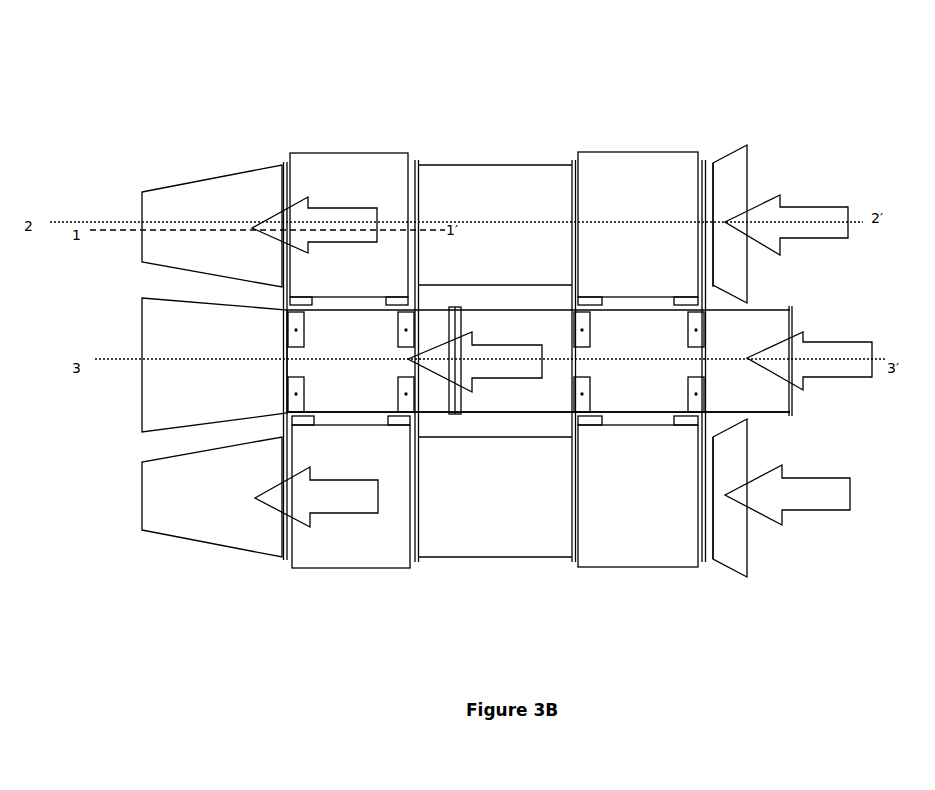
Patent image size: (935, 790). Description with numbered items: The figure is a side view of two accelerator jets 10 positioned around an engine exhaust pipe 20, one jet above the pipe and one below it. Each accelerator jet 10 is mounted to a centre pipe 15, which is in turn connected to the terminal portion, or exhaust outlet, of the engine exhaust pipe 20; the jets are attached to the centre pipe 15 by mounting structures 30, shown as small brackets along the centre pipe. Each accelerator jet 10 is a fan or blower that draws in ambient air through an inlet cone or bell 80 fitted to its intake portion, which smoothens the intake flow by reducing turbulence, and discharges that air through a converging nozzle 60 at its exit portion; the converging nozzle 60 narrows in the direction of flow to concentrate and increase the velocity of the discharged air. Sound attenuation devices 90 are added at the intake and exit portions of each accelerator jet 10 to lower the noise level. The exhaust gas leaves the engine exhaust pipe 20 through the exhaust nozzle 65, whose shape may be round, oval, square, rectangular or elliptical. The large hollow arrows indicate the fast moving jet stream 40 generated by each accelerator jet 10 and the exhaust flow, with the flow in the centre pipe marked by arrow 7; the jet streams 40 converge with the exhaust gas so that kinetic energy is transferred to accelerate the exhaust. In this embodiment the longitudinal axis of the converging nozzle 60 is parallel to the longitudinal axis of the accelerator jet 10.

The flow direction arrow 7 is at (415, 359).
The accelerator jet 10 is at (455, 163).
The centre pipe 15 is at (530, 414).
The engine exhaust pipe 20 is at (794, 405).
The mounting structures 30 is at (284, 367).
The jet stream 40 is at (285, 210).
The converging nozzle 60 is at (193, 349).
The exhaust nozzle 65 is at (140, 393).
The inlet cone 80 is at (749, 190).
The sound attenuation device 90 is at (335, 154).